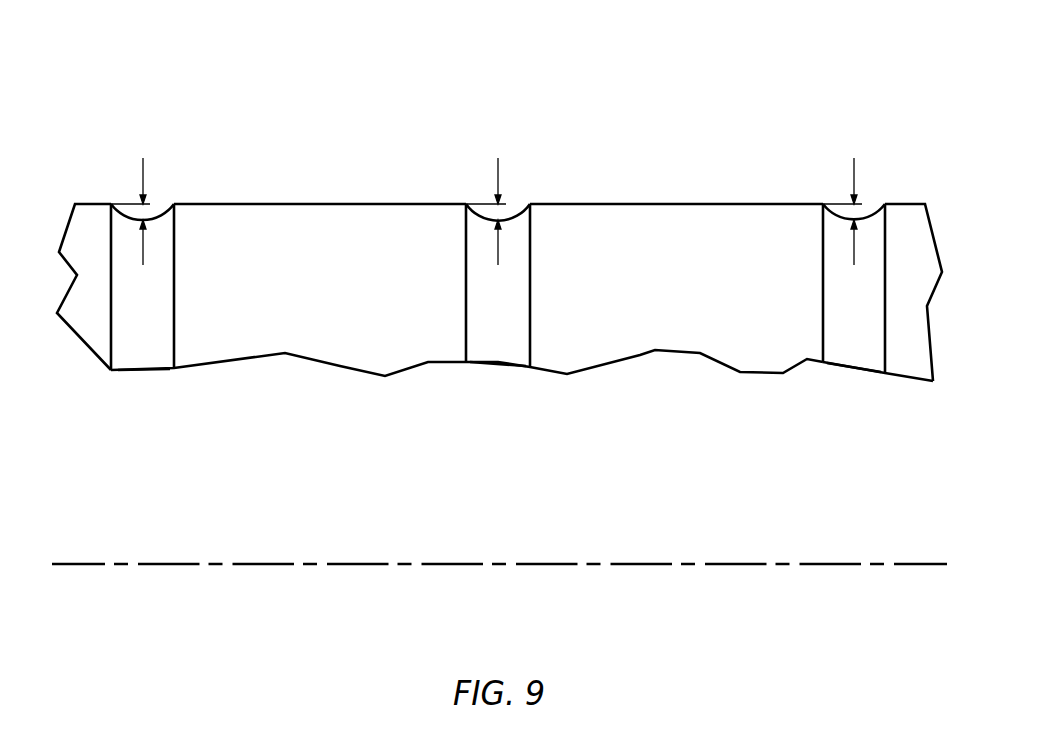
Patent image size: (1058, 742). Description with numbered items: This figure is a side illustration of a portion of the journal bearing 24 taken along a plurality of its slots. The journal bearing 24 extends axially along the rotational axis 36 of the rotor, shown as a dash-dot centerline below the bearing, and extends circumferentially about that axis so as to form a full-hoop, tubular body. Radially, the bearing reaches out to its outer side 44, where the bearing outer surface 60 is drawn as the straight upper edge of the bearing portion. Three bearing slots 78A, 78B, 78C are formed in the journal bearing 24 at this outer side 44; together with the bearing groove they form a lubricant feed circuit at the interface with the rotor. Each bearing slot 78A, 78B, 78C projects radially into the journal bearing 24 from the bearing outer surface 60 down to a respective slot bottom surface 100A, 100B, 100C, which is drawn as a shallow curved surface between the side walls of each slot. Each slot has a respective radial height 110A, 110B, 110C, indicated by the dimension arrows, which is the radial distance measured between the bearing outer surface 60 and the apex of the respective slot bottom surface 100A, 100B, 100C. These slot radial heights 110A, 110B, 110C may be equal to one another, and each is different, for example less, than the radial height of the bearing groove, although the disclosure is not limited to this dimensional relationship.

The journal bearing 24 is at (499, 238).
The outer side 44 is at (498, 163).
The bearing outer surface 60 is at (340, 200).
The rotational axis 36 is at (937, 565).
The slot bottom surface 100A is at (162, 278).
The slot bottom surface 100B is at (838, 298).
The slot bottom surface 100C is at (507, 280).
The radial height 110A is at (145, 176).
The radial height 110B is at (857, 176).
The radial height 110C is at (500, 176).
The journal bearing slot 78A is at (142, 355).
The journal bearing slot 78B is at (853, 355).
The journal bearing slot 78C is at (492, 352).